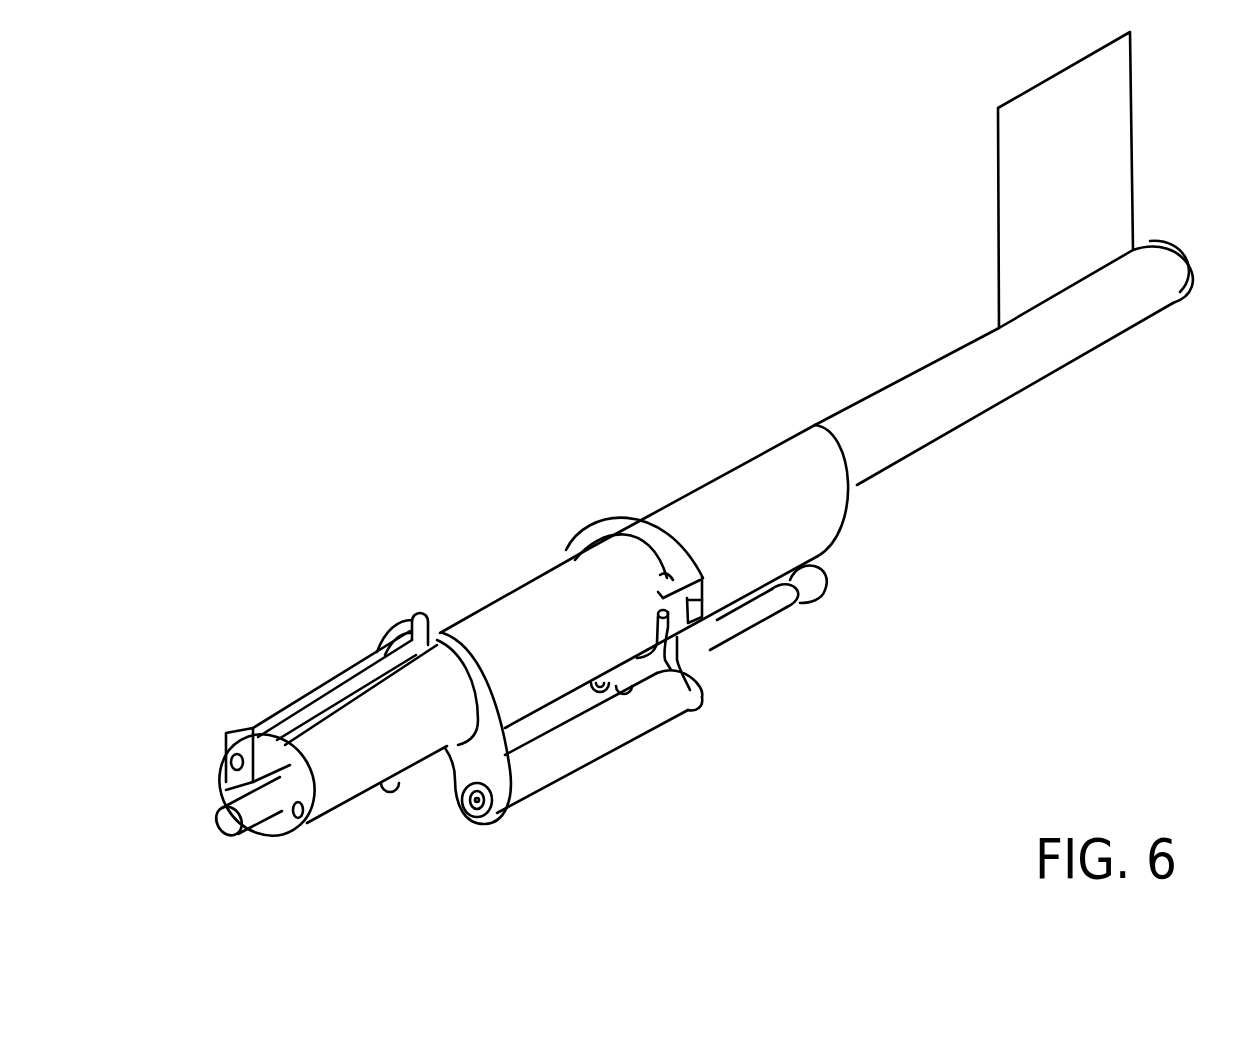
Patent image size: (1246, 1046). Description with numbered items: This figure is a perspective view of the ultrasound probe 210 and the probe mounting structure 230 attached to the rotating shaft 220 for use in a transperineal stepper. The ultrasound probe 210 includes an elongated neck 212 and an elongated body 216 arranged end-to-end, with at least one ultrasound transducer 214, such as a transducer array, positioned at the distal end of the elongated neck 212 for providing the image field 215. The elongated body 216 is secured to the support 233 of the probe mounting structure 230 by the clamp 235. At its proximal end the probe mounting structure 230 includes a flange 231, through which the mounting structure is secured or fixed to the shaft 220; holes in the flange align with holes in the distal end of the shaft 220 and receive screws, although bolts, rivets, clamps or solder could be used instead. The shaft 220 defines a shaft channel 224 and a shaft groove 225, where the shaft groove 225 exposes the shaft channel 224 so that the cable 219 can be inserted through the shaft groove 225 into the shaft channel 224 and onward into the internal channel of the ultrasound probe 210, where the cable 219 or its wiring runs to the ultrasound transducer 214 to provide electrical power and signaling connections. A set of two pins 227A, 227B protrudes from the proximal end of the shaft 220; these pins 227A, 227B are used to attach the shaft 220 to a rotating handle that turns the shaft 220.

The ultrasound probe 210 is at (490, 566).
The elongated neck 212 is at (925, 447).
The ultrasound transducer 214 is at (1090, 345).
The image field 215 is at (1130, 160).
The elongated body 216 is at (673, 500).
The cable 219 is at (225, 824).
The shaft 220 is at (373, 790).
The shaft channel 224 is at (255, 780).
The shaft groove 225 is at (328, 683).
The pin 227A is at (298, 820).
The pin 227B is at (236, 740).
The probe mounting structure 230 is at (590, 757).
The flange 231 is at (493, 828).
The support 233 is at (715, 648).
The clamp 235 is at (612, 520).